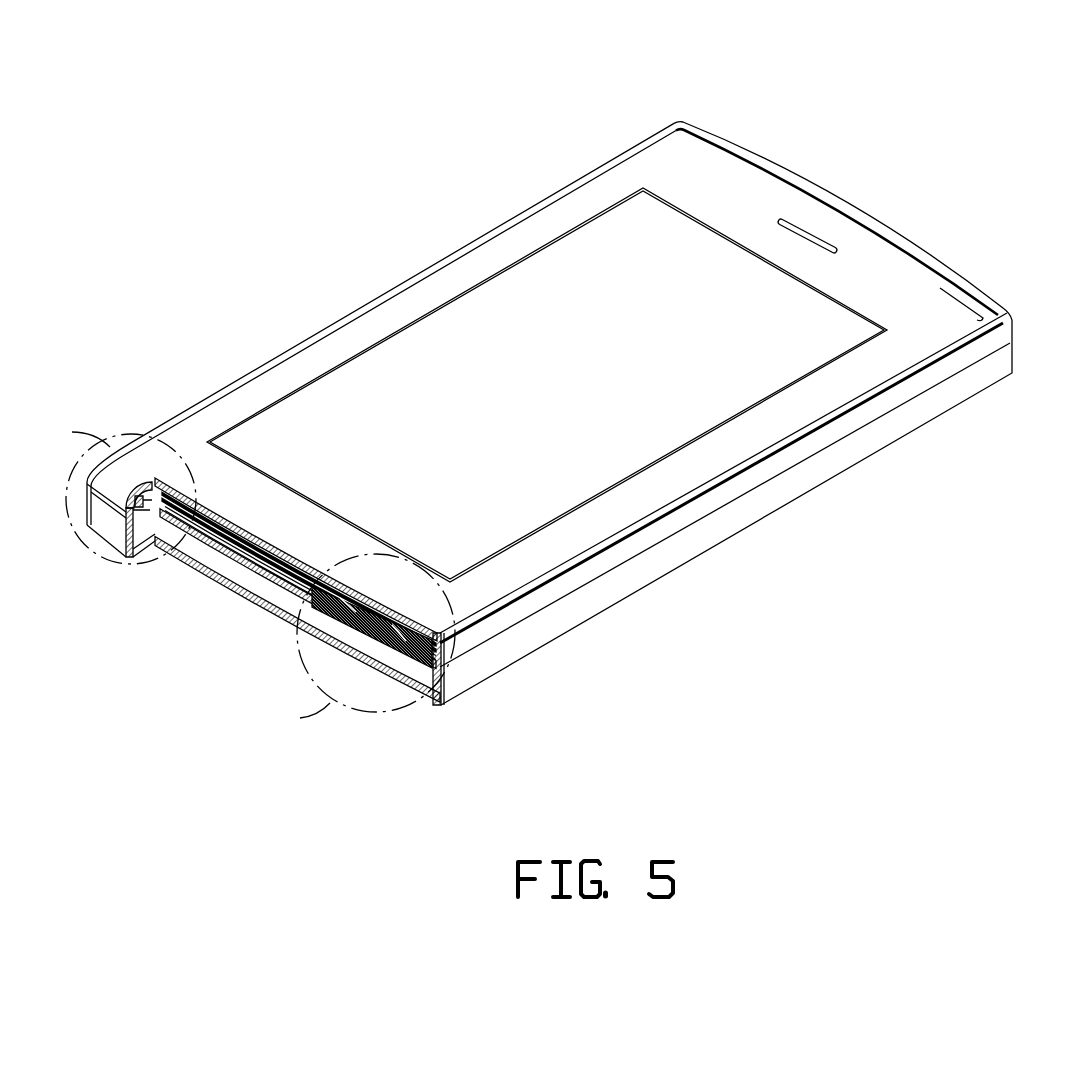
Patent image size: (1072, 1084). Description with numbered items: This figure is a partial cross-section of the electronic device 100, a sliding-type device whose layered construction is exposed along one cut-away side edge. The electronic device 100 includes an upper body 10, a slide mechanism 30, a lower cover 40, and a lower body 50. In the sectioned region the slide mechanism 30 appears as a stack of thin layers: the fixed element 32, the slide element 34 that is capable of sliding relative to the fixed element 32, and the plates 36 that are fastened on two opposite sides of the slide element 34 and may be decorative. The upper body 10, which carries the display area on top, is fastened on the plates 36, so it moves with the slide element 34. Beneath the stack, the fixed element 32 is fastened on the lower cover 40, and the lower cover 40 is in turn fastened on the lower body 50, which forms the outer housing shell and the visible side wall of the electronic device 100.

The electronic device 100 is at (516, 438).
The upper body 10 is at (430, 288).
The slide mechanism 30 is at (290, 590).
The fixed element 32 is at (143, 593).
The slide element 34 is at (258, 598).
The plates 36 is at (217, 572).
The lower cover 40 is at (410, 667).
The lower body 50 is at (435, 700).